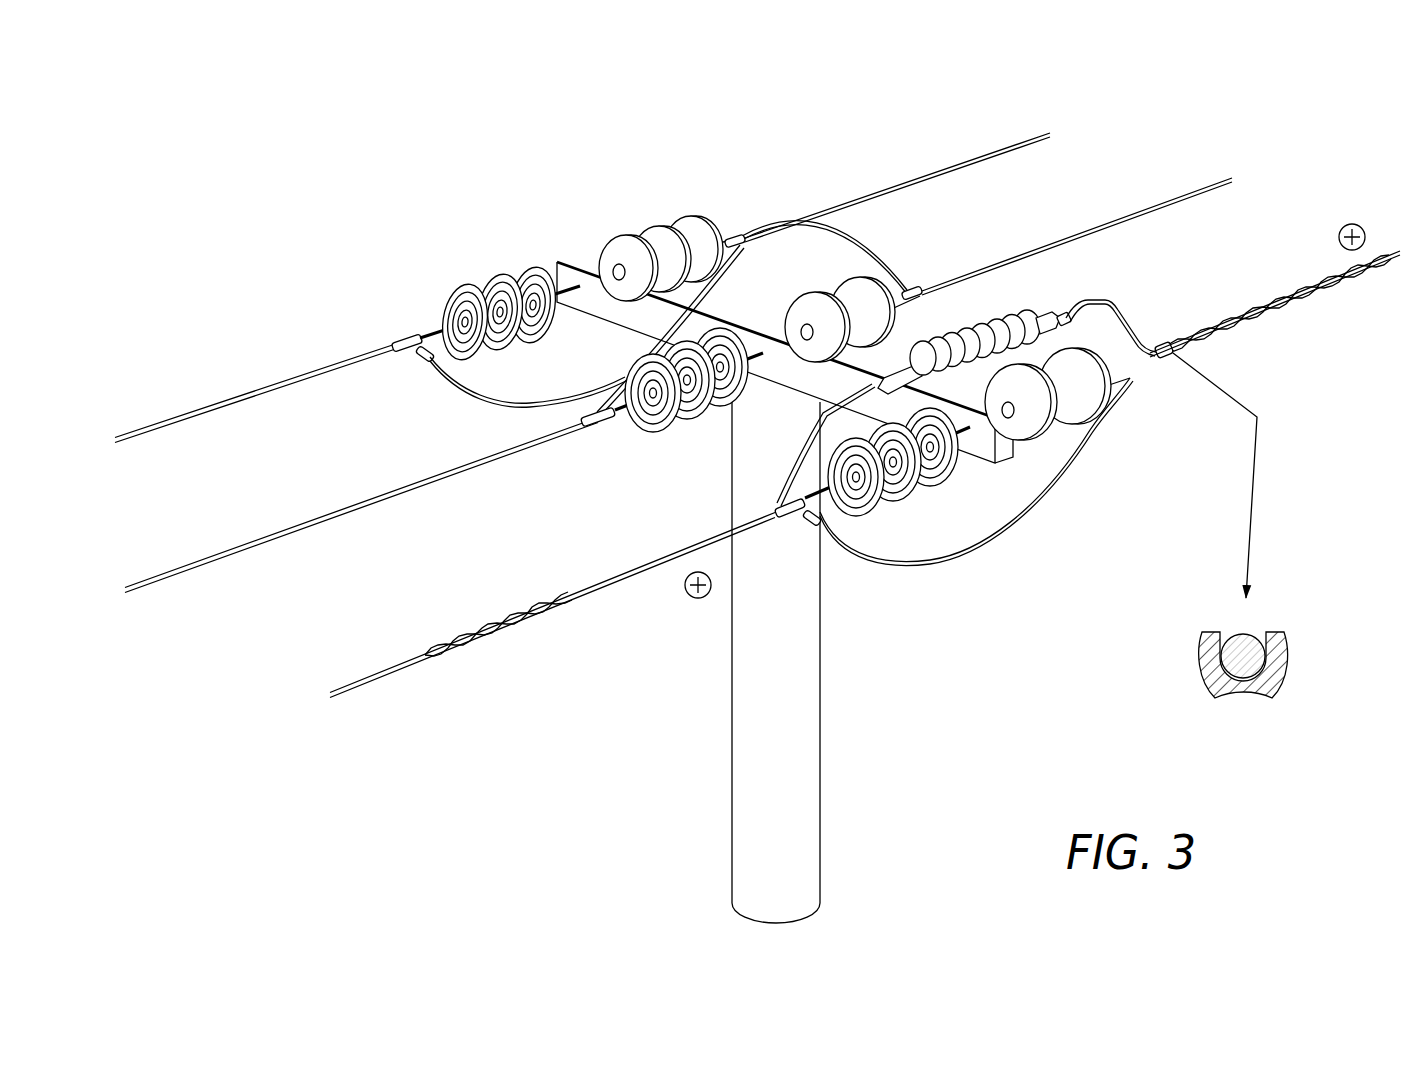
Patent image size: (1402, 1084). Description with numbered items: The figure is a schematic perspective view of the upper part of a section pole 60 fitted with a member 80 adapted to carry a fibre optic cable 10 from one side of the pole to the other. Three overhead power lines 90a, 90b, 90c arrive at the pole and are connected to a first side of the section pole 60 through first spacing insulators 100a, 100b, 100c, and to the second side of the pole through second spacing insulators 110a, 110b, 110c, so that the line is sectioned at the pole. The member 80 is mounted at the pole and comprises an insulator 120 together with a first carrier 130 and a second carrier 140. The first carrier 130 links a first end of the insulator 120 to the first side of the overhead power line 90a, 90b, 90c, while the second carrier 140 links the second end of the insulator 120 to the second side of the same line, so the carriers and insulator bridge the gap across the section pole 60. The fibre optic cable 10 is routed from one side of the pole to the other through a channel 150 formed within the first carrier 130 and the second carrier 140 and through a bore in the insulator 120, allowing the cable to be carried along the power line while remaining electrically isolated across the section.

The fibre optic cable 10 is at (522, 622).
The section pole 60 is at (822, 664).
The member 80 is at (994, 308).
The overhead power line 90a is at (320, 372).
The overhead power line 90b is at (320, 507).
The overhead power line 90c is at (342, 681).
The first spacing insulator 100a is at (440, 302).
The first spacing insulator 100b is at (632, 432).
The first spacing insulator 100c is at (883, 515).
The second spacing insulator 110a is at (703, 220).
The second spacing insulator 110b is at (842, 284).
The second spacing insulator 110c is at (1100, 409).
The insulator 120 is at (1025, 307).
The first carrier 130 is at (572, 261).
The second carrier 140 is at (1138, 322).
The channel 150 is at (1207, 632).